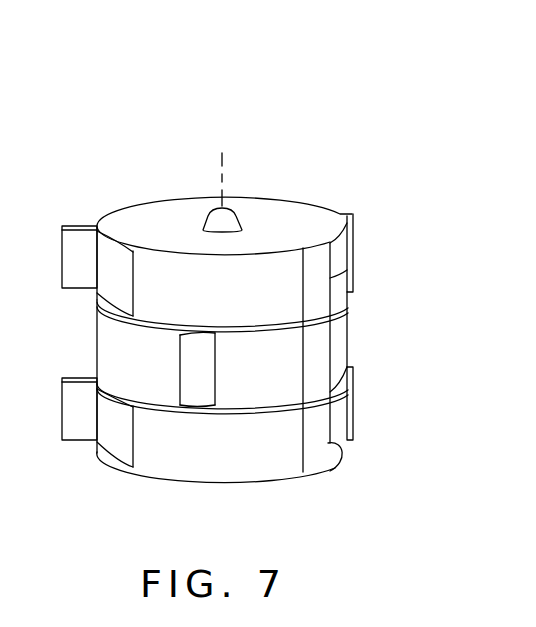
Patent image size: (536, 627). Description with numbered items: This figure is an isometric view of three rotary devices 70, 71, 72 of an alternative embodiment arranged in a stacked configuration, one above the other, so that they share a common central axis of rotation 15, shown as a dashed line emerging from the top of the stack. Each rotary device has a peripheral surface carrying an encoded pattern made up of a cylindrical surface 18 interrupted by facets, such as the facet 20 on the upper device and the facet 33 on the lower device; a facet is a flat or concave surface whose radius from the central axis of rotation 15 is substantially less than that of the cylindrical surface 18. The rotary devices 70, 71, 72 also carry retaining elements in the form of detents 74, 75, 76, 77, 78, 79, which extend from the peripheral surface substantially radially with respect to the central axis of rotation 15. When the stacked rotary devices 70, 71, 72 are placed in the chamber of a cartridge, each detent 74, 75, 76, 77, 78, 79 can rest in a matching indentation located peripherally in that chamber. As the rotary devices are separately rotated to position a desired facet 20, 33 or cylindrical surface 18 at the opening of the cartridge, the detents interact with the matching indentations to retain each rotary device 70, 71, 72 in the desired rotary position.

The central axis of rotation 15 is at (222, 163).
The cylindrical surface 18 is at (175, 281).
The facet 20 is at (108, 272).
The facet 33 is at (111, 424).
The rotary device 70 is at (262, 197).
The rotary device 71 is at (97, 335).
The rotary device 72 is at (254, 480).
The detent 74 is at (352, 213).
The detent 75 is at (332, 278).
The detent 76 is at (333, 355).
The detent 77 is at (193, 369).
The detent 78 is at (353, 420).
The detent 79 is at (334, 470).